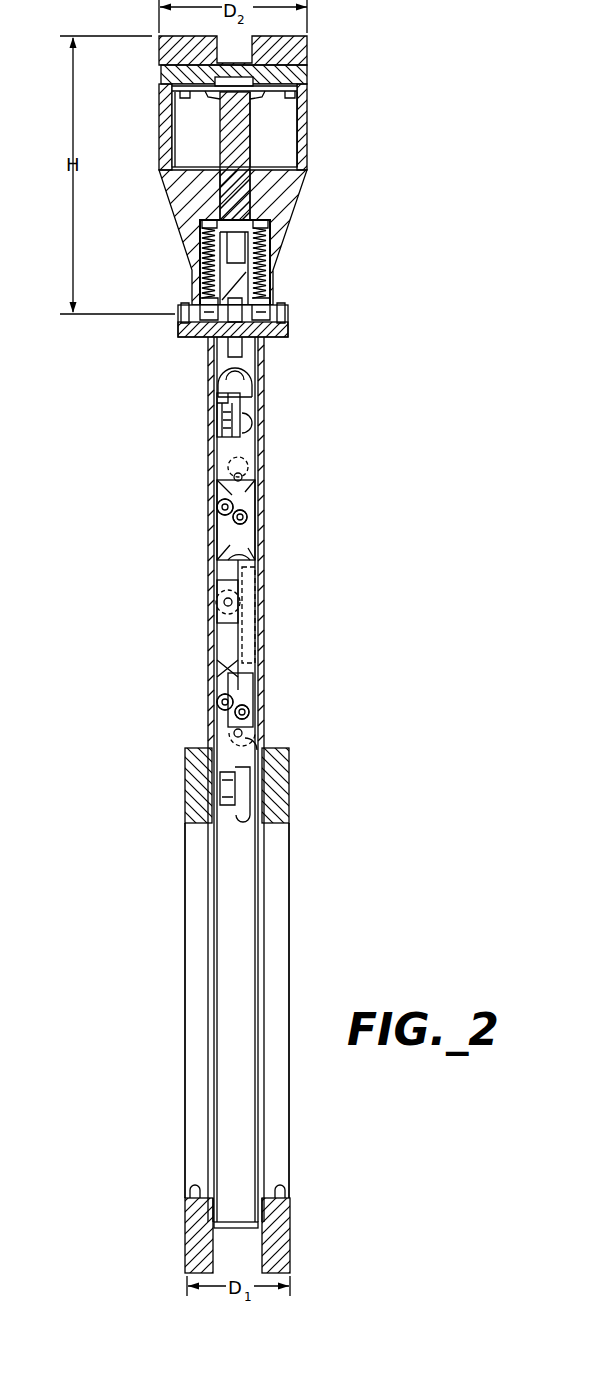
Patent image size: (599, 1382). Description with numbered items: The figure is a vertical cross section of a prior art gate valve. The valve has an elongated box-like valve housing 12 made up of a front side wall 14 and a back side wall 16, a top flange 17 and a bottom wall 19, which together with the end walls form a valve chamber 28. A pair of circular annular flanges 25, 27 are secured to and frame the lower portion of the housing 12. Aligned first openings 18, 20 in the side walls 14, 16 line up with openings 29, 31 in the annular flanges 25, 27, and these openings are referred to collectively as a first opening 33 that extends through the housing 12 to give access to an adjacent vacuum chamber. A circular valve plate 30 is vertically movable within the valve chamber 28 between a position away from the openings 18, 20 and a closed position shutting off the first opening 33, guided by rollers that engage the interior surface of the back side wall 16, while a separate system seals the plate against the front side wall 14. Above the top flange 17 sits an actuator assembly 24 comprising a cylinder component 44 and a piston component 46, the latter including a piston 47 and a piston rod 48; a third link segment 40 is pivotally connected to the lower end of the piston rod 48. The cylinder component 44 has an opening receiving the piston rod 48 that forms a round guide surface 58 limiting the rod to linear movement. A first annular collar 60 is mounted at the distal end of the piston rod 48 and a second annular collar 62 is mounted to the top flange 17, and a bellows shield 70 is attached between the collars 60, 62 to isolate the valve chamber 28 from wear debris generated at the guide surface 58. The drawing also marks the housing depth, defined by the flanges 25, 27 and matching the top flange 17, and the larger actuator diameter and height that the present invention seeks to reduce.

The valve housing 12 is at (270, 392).
The front side wall 14 is at (210, 642).
The back side wall 16 is at (263, 603).
The top flange 17 is at (178, 318).
The first opening 18 is at (213, 1198).
The bottom wall 19 is at (240, 1227).
The first opening 20 is at (265, 1198).
The actuator assembly 24 is at (312, 97).
The circular annular flange 25 is at (185, 790).
The circular annular flange 27 is at (289, 802).
The valve chamber 28 is at (215, 860).
The opening 29 is at (188, 1186).
The valve plate 30 is at (222, 562).
The opening 31 is at (287, 1186).
The first opening 33 is at (176, 978).
The third link segment 40 is at (266, 267).
The cylinder component 44 is at (152, 191).
The piston component 46 is at (208, 120).
The piston 47 is at (170, 103).
The piston rod 48 is at (250, 165).
The guide surface 58 is at (255, 214).
The first annular collar 60 is at (205, 220).
The second annular collar 62 is at (200, 298).
The bellows shield 70 is at (200, 275).